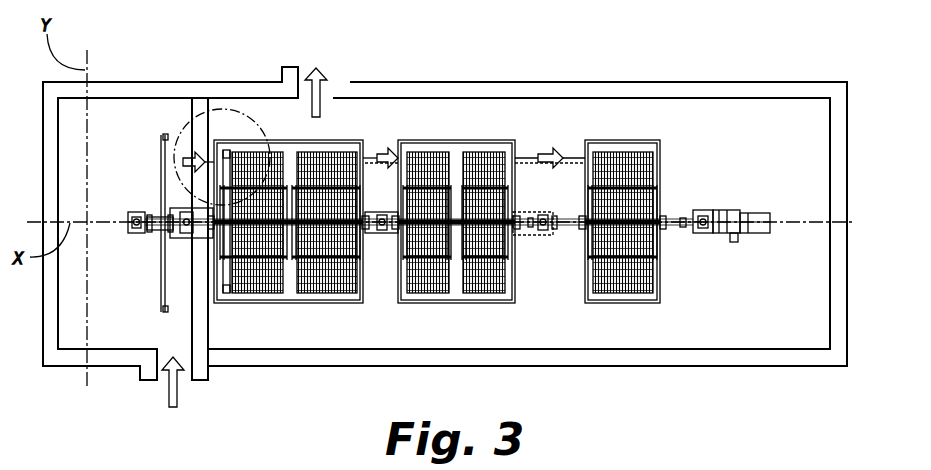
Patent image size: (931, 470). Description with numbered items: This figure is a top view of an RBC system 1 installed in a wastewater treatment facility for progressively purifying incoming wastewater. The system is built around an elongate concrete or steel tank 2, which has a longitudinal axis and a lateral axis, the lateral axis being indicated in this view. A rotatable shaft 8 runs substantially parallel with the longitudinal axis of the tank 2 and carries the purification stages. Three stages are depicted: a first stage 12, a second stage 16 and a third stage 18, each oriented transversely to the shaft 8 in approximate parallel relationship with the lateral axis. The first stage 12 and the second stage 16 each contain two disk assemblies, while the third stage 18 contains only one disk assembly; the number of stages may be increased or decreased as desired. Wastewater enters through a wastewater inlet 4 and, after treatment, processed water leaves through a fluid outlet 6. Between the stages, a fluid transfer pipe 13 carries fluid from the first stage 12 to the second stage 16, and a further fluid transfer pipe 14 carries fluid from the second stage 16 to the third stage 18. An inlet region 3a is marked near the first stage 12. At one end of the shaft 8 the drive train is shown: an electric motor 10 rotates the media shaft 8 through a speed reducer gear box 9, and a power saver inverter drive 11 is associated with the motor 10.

The RBC system 1 is at (160, 275).
The elongate tank 2 is at (572, 82).
The inlet opening 3a is at (221, 110).
The wastewater inlet 4 is at (181, 393).
The fluid outlet 6 is at (311, 72).
The rotatable shaft 8 is at (580, 228).
The speed reducer gear box 9 is at (703, 220).
The electric motor 10 is at (720, 237).
The power saver inverter drive 11 is at (736, 242).
The first stage 12 is at (255, 288).
The fluid transfer pipe 13 is at (375, 152).
The fluid transfer pipe 14 is at (528, 155).
The second stage 16 is at (413, 288).
The third stage 18 is at (623, 290).